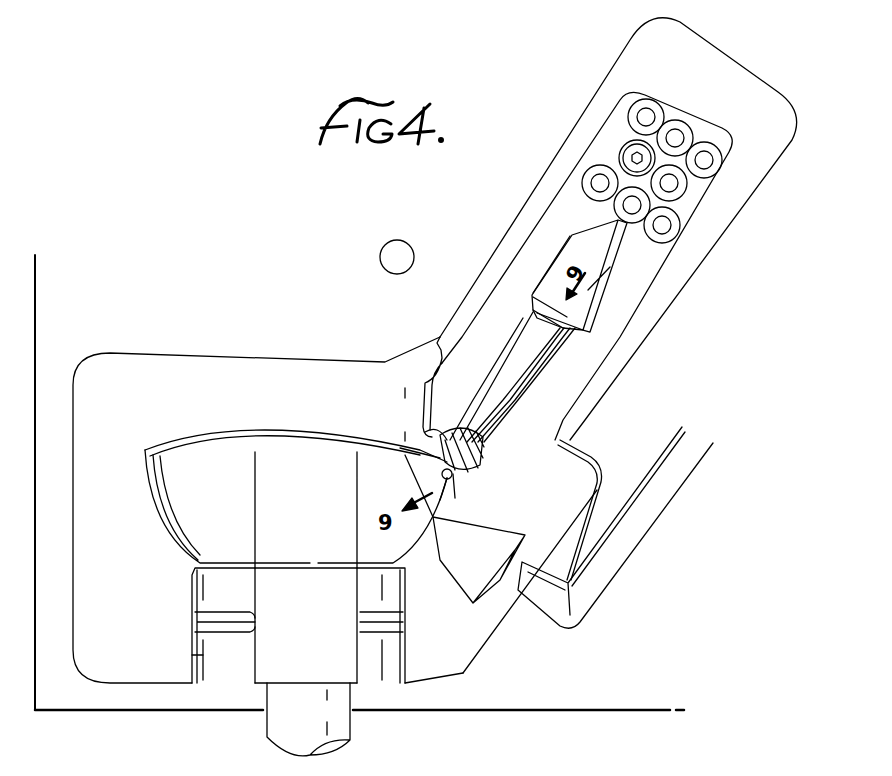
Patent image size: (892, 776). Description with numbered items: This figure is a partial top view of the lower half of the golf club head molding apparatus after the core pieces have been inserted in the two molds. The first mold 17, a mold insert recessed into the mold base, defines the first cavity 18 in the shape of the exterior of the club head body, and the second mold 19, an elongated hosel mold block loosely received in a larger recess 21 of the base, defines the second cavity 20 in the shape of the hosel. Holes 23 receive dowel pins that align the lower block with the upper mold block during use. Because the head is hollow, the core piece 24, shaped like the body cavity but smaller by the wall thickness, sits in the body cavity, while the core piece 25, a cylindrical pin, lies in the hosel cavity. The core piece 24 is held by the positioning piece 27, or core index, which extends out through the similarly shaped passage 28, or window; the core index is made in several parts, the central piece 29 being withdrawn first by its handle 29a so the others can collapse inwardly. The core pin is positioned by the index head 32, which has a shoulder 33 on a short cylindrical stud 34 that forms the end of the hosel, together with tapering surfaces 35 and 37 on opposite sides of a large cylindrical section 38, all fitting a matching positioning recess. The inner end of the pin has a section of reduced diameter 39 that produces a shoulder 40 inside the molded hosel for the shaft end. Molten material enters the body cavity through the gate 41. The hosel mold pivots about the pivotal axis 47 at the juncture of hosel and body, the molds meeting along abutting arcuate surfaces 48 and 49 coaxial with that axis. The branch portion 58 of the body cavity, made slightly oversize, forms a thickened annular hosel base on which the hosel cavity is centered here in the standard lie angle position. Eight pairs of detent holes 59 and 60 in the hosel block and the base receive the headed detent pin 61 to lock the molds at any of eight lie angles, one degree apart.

The first mold 17 is at (178, 401).
The first cavity 18 is at (245, 435).
The second mold 19 is at (617, 130).
The second cavity 20 is at (498, 368).
The recess 21 is at (716, 226).
The holes 23 is at (397, 240).
The core piece 24 is at (330, 507).
The core piece 25 is at (522, 382).
The positioning piece 27 is at (213, 606).
The passage 28 is at (203, 655).
The central piece 29 is at (320, 628).
The handle 29a is at (333, 728).
The index head 32 is at (585, 332).
The shoulder 33 is at (523, 342).
The cylindrical stud 34 is at (540, 330).
The tapering surface 35 is at (520, 300).
The tapering surface 37 is at (628, 250).
The cylindrical section 38 is at (600, 290).
The section of reduced diameter 39 is at (420, 445).
The shoulder 40 is at (440, 450).
The gate 41 is at (473, 558).
The pivotal axis 47 is at (440, 474).
The arcuate surface 48 is at (456, 476).
The arcuate surface 49 is at (510, 462).
The branch portion 58 is at (455, 432).
The detent holes 59 is at (712, 162).
The detent holes 60 is at (690, 185).
The detent pin 61 is at (632, 160).